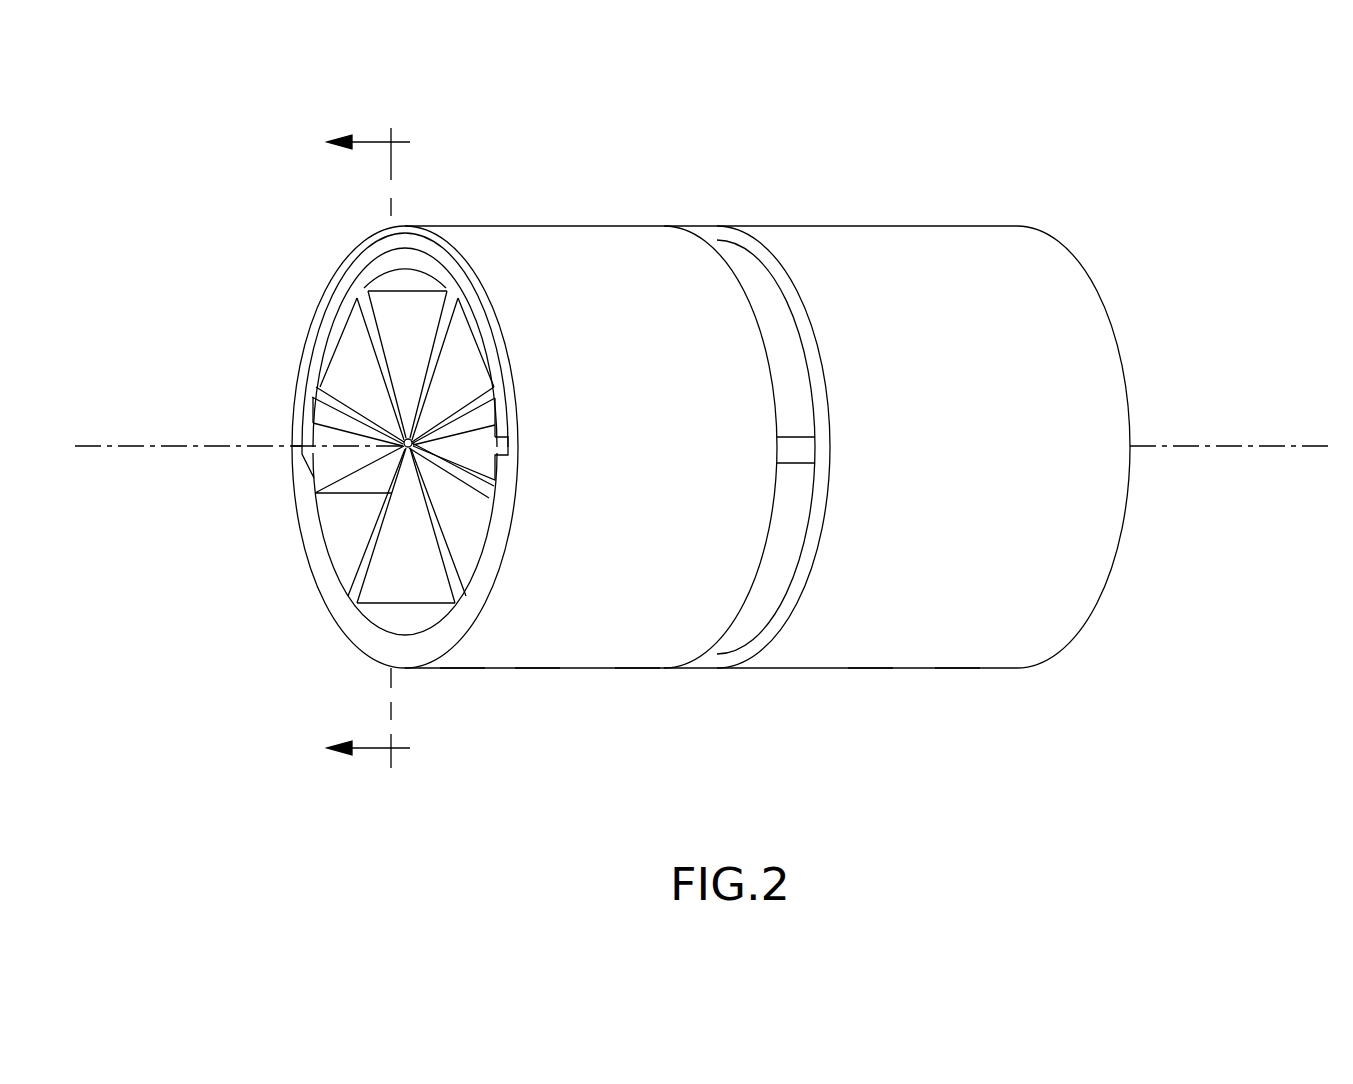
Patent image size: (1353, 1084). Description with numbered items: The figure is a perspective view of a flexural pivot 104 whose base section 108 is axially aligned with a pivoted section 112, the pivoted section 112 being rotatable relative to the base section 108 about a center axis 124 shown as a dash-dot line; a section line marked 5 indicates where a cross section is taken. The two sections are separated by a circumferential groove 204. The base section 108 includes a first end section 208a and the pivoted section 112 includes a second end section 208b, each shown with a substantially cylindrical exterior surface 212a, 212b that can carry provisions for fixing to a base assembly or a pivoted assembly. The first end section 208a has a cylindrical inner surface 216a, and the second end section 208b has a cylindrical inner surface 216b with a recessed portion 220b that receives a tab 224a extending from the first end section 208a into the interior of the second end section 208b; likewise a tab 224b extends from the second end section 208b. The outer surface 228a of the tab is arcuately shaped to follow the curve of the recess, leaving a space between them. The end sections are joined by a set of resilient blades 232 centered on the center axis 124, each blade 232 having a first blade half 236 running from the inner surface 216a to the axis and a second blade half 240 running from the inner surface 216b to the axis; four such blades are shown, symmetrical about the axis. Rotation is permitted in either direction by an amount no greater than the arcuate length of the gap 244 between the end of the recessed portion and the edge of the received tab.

The section line 5- 5 is at (368, 450).
The flexural pivot 104 is at (1064, 338).
The base section 108 is at (1033, 638).
The pivoted section 112 is at (535, 670).
The center axis 124 is at (1237, 452).
The circumferential groove 204 is at (797, 298).
The first end section 208a is at (955, 670).
The second end section 208b is at (460, 670).
The exterior surface 212a is at (870, 670).
The exterior surface 212b is at (637, 670).
The inner surface 216a is at (385, 278).
The inner surface 216b is at (397, 622).
The recessed portion 220b is at (304, 400).
The tab 224a is at (410, 260).
The tab 224b is at (738, 658).
The outer surface 228a is at (335, 300).
The resilient blade 232 is at (388, 315).
The first blade half 236 is at (400, 354).
The second blade half 240 is at (400, 557).
The gap 244 is at (796, 450).